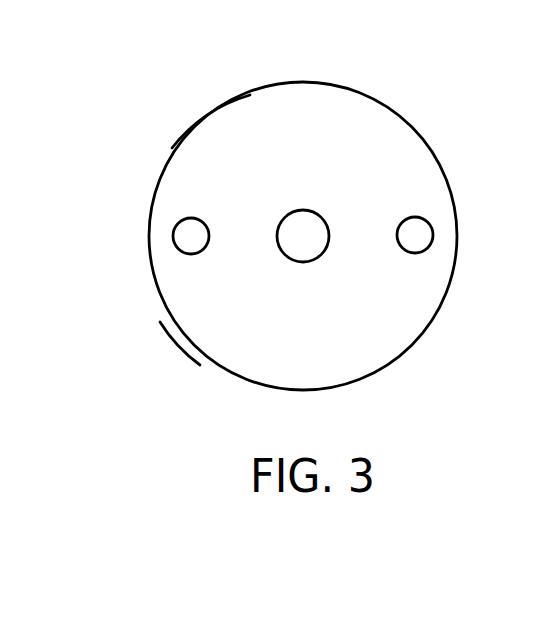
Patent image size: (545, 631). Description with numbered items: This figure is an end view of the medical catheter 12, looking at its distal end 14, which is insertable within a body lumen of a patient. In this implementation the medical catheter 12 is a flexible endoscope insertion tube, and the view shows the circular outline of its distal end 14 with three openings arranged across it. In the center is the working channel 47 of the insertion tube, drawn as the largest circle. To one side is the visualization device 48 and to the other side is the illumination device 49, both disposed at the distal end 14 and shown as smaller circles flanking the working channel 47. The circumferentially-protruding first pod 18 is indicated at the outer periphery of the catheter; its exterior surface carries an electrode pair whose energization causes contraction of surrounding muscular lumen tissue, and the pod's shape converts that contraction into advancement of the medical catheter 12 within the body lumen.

The medical catheter 12 is at (392, 92).
The distal end 14 is at (200, 132).
The circumferentially-protruding first pod 18 is at (193, 307).
The working channel 47 is at (303, 218).
The visualization device 48 is at (414, 222).
The illumination device 49 is at (192, 222).